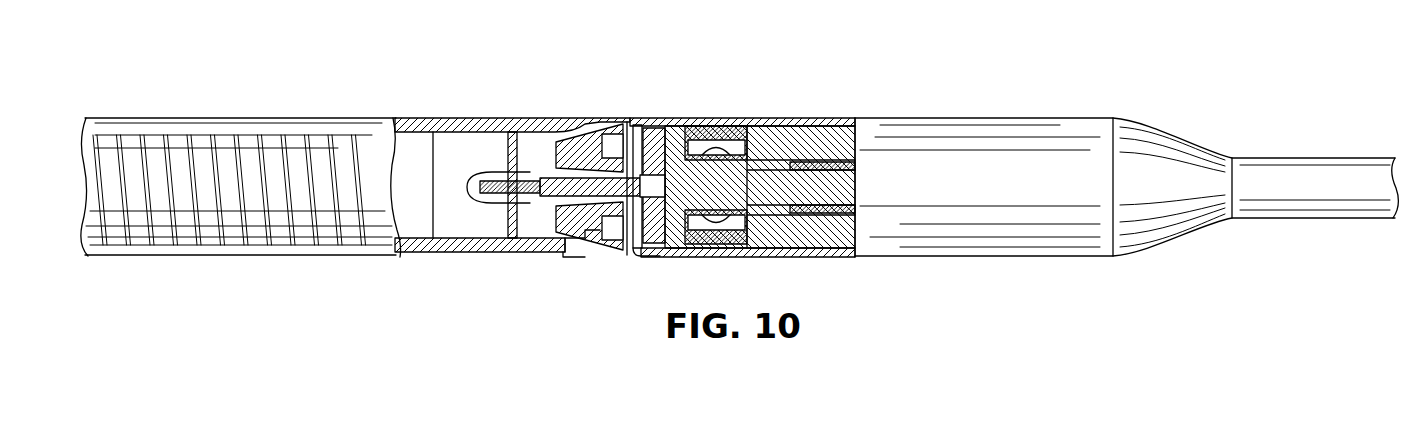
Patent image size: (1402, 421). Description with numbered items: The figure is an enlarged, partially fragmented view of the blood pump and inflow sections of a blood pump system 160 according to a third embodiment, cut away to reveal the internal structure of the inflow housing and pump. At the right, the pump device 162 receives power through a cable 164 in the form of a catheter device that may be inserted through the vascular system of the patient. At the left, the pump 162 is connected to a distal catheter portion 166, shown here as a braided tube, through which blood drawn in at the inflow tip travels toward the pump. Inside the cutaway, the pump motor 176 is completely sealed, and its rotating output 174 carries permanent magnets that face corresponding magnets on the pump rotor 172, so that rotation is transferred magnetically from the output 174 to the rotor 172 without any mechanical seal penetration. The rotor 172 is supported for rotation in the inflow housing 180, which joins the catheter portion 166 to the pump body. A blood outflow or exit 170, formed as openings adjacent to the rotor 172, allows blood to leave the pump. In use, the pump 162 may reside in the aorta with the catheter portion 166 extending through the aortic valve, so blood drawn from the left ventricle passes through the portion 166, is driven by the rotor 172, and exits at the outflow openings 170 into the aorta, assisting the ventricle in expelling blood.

The blood pump system 160 is at (1038, 52).
The pump device 162 is at (921, 117).
The cable 164 is at (1285, 157).
The distal catheter portion 166 is at (252, 258).
The blood outflow openings 170 is at (585, 252).
The pump rotor 172 is at (610, 132).
The rotating output 174 is at (660, 132).
The pump motor 176 is at (765, 126).
The inflow housing 180 is at (493, 125).